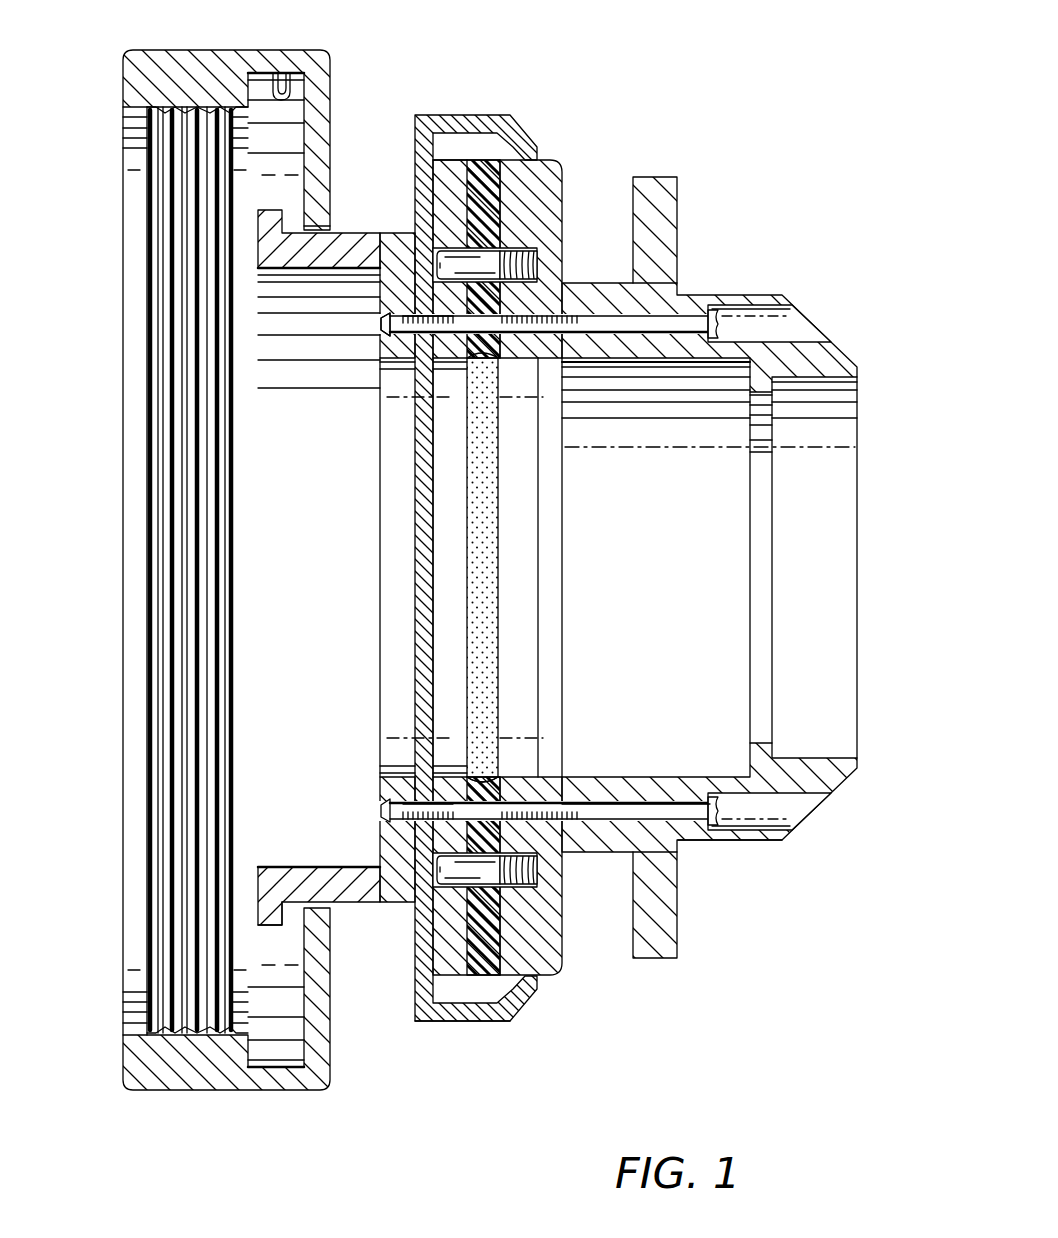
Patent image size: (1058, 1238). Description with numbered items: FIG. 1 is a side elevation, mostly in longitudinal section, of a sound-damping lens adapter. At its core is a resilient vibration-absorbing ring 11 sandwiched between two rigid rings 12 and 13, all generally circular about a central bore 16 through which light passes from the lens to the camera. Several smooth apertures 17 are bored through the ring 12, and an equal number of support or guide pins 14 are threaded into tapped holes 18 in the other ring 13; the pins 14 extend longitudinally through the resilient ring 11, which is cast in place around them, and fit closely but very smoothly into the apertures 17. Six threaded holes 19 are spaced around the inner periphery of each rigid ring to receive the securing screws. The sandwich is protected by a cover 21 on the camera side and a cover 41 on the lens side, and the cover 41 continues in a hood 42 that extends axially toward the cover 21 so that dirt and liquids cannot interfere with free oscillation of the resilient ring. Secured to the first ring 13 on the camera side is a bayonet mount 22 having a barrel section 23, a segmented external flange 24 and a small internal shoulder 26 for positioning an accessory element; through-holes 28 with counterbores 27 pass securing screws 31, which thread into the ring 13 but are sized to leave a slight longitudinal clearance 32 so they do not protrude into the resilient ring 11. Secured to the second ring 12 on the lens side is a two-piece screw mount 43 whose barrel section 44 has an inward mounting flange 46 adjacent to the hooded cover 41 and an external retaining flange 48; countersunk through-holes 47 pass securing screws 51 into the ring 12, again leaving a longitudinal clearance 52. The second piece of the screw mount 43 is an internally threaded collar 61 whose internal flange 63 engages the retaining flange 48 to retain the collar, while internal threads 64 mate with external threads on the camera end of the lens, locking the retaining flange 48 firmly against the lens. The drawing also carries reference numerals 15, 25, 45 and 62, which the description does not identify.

The resilient vibration-absorbing ring 11 is at (487, 168).
The rigid ring 12 is at (452, 162).
The rigid ring 13 is at (518, 175).
The guide pins 14 is at (470, 233).
The threaded bore 15 is at (505, 248).
The central bore 16 is at (440, 567).
The smooth apertures 17 is at (445, 250).
The tapped holes 18 is at (533, 250).
The threaded holes 19 is at (527, 330).
The cover 21 is at (563, 257).
The bayonet mount 22 is at (845, 344).
The barrel section 23 is at (735, 842).
The segmented external flange 24 is at (680, 224).
The chamber 25 is at (695, 603).
The internal shoulder 26 is at (772, 752).
The counterbores 27 is at (808, 808).
The through-holes 28 is at (688, 807).
The securing screws 31 is at (648, 810).
The longitudinal clearance 32 is at (500, 786).
The cover 41 is at (415, 146).
The hood 42 is at (473, 1020).
The screw mount 43 is at (260, 593).
The barrel section 44 is at (355, 895).
The cavity 45 is at (362, 567).
The inward mounting flange 46 is at (383, 297).
The countersunk through-holes 47 is at (383, 343).
The external retaining flange 48 is at (287, 923).
The securing screws 51 is at (382, 317).
The longitudinal clearance 52 is at (400, 400).
The internally threaded collar 61 is at (187, 1092).
The O-ring 62 is at (280, 72).
The internal flange 63 is at (305, 1040).
The internal threads 64 is at (190, 707).